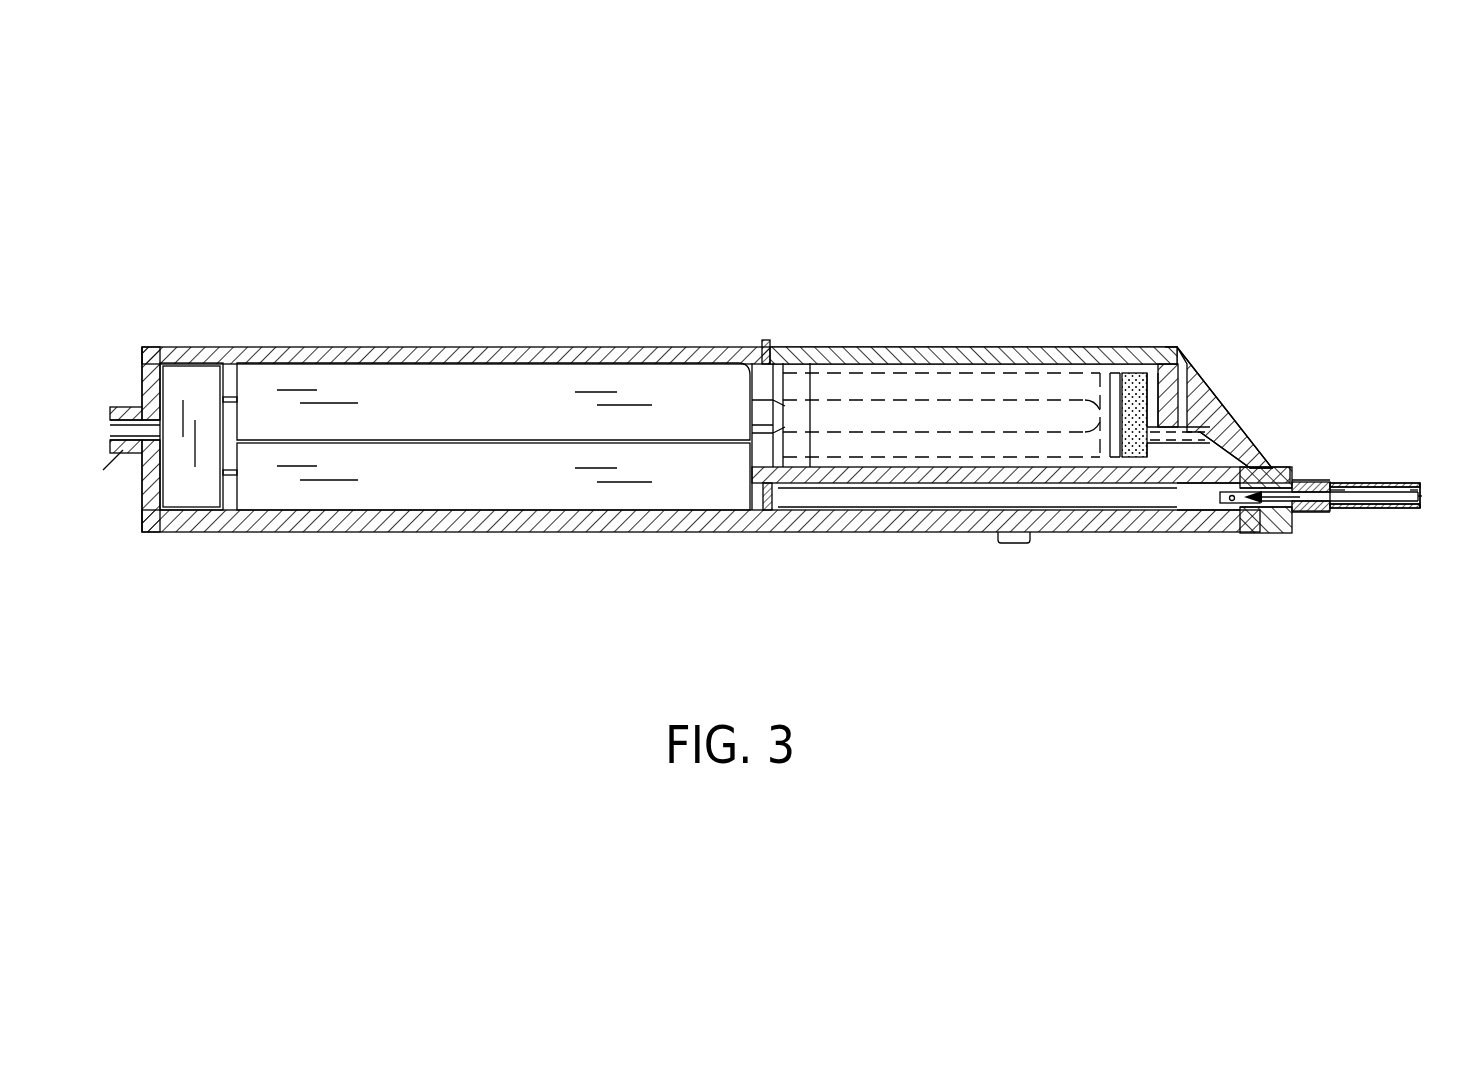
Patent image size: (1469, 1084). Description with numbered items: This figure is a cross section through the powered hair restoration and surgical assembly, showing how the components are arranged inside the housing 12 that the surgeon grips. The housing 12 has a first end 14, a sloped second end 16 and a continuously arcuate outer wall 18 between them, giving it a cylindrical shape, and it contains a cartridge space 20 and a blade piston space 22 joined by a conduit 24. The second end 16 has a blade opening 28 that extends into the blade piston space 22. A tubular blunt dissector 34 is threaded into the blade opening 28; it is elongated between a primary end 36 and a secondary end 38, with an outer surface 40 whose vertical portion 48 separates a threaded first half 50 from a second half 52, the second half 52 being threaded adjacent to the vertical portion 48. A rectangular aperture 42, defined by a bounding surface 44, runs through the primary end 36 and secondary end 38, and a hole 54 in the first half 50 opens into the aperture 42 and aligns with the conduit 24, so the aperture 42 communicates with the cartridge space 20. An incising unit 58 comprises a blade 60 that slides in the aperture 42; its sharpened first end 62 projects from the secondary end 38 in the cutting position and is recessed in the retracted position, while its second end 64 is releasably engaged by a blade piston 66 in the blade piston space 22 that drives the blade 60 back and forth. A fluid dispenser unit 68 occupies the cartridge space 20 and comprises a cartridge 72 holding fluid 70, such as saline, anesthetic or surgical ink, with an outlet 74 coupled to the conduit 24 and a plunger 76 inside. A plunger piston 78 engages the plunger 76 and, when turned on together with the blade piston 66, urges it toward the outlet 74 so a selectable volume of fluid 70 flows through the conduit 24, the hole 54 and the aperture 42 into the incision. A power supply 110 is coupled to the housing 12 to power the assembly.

The housing 12 is at (1060, 533).
The first end 14 is at (142, 392).
The second end 16 is at (1250, 466).
The outer wall 18 is at (731, 533).
The cartridge space 20 is at (882, 383).
The blade piston space 22 is at (900, 498).
The conduit 24 is at (1230, 428).
The blade opening 28 is at (1252, 534).
The blunt dissector 34 is at (1369, 465).
The primary end 36 is at (1107, 533).
The secondary end 38 is at (1395, 508).
The outer surface 40 is at (1360, 510).
The aperture 42 is at (1392, 487).
The bounding surface 44 is at (1347, 487).
The vertical portion 48 is at (1338, 486).
The first half 50 is at (1280, 524).
The second half 52 is at (1347, 510).
The hole 54 is at (1190, 500).
The incising unit 58 is at (1012, 543).
The blade 60 is at (1370, 508).
The first end 62 is at (1425, 500).
The second end 64 is at (1195, 533).
The blade piston 66 is at (849, 500).
The fluid dispenser unit 68 is at (1008, 376).
The fluid 70 is at (1138, 374).
The cartridge 72 is at (1077, 372).
The outlet 74 is at (1183, 366).
The plunger 76 is at (1115, 373).
The plunger piston 78 is at (763, 400).
The power supply 110 is at (122, 452).